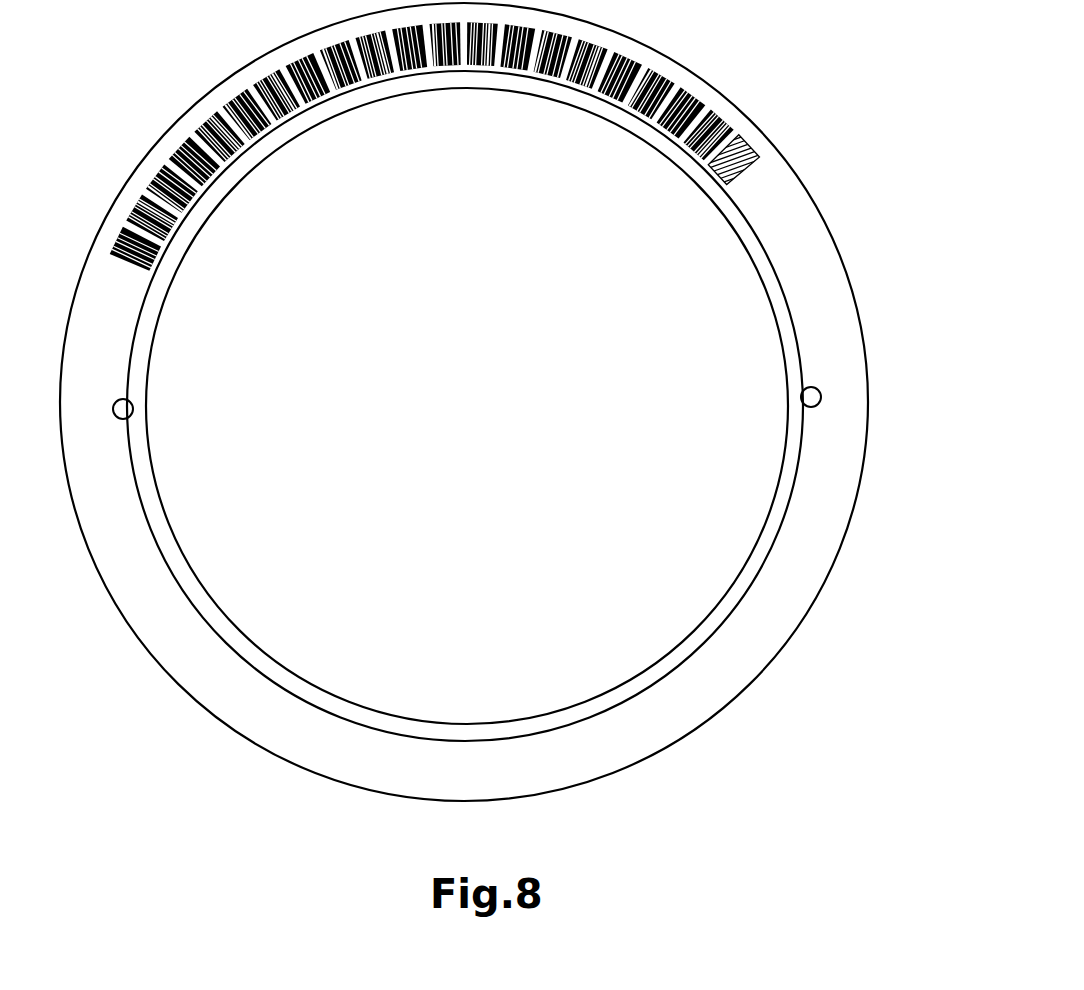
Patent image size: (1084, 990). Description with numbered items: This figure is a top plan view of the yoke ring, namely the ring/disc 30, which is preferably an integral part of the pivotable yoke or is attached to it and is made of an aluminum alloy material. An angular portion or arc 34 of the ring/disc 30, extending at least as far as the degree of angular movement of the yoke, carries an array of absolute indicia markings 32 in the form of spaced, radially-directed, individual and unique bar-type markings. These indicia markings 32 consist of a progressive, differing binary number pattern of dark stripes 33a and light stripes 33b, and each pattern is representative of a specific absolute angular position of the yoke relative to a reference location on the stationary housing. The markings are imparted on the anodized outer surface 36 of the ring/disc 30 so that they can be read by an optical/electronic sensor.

The ring/disc 30 is at (857, 215).
The indicia markings 32 is at (735, 80).
The dark stripe 33a is at (698, 92).
The light stripe 33b is at (679, 88).
The angular portion 34 is at (748, 106).
The outer surface 36 is at (757, 178).